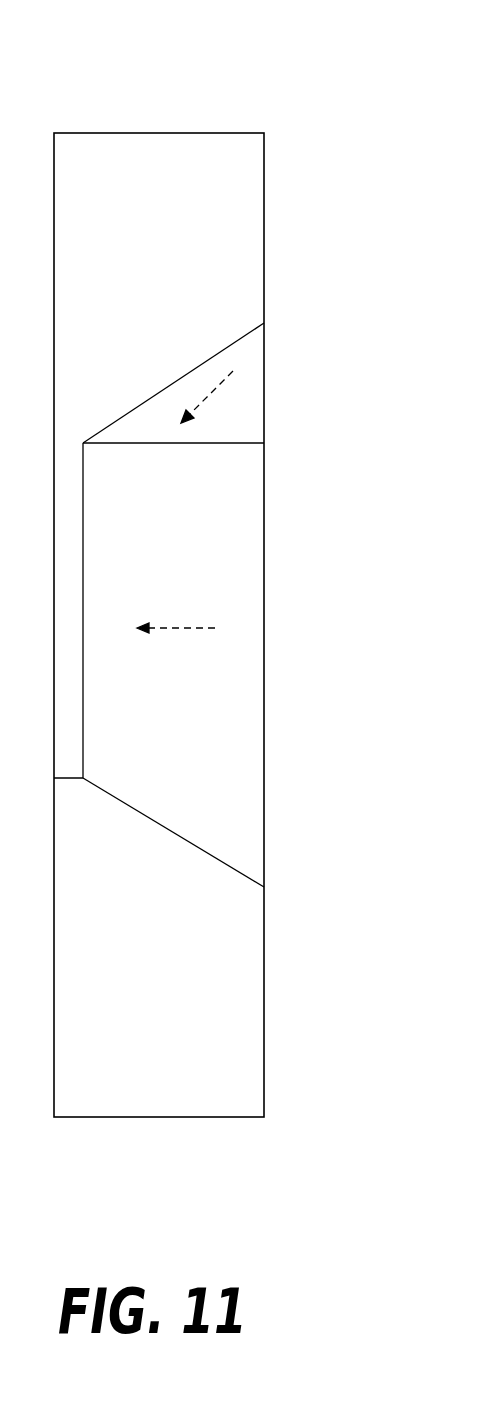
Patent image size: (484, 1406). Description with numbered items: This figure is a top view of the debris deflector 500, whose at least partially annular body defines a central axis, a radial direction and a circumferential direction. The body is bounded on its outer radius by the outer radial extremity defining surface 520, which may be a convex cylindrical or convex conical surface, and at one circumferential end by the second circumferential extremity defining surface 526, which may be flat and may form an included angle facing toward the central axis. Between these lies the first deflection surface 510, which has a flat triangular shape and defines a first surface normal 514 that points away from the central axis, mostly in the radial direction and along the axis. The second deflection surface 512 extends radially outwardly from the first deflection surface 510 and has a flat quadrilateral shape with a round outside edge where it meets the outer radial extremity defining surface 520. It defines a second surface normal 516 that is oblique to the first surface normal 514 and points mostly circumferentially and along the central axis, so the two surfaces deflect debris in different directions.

The debris deflector 500 is at (305, 90).
The second circumferential extremity defining surface 526 is at (175, 252).
The outer radial extremity defining surface 520 is at (175, 1024).
The second deflection surface 512 is at (243, 761).
The first deflection surface 510 is at (247, 397).
The first surface normal 514 is at (207, 398).
The second surface normal 516 is at (196, 630).